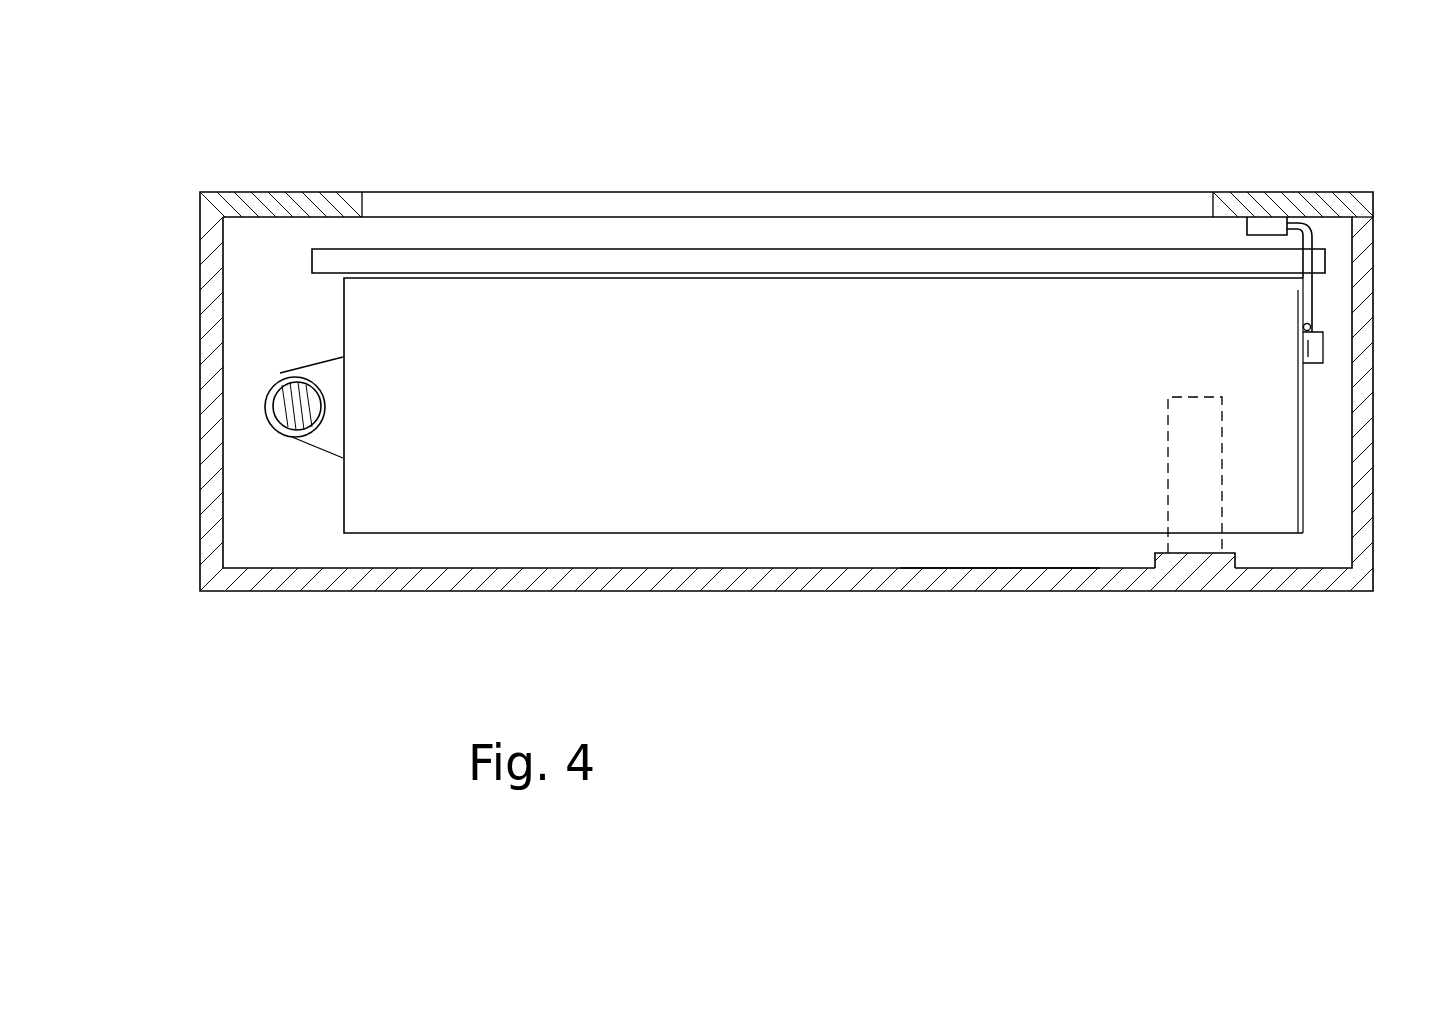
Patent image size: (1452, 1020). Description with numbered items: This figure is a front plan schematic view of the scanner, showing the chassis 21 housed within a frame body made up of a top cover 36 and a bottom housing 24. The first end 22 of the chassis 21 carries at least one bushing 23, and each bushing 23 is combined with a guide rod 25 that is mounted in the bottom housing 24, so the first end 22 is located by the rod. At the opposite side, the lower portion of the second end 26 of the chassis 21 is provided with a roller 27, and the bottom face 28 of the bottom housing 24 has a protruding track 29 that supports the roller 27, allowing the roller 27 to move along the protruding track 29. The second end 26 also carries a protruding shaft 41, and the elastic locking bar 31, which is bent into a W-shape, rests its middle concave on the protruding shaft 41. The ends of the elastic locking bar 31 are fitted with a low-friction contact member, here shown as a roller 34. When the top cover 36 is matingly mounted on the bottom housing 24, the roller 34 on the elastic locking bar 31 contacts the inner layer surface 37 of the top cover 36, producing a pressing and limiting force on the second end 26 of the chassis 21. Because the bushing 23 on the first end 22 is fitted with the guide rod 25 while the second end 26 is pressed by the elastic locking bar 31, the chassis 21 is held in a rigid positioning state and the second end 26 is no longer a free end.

The chassis 21 is at (778, 534).
The first end 22 is at (343, 320).
The bushing 23 is at (327, 438).
The bottom housing 24 is at (205, 363).
The guide rod 25 is at (300, 408).
The second end 26 is at (1302, 403).
The roller 27 is at (1197, 537).
The bottom face 28 is at (975, 563).
The protruding track 29 is at (1217, 562).
The elastic locking bar 31 is at (1313, 292).
The roller 34 is at (1268, 220).
The top cover 36 is at (1235, 192).
The inner layer surface 37 is at (1334, 224).
The protruding shaft 41 is at (1323, 348).